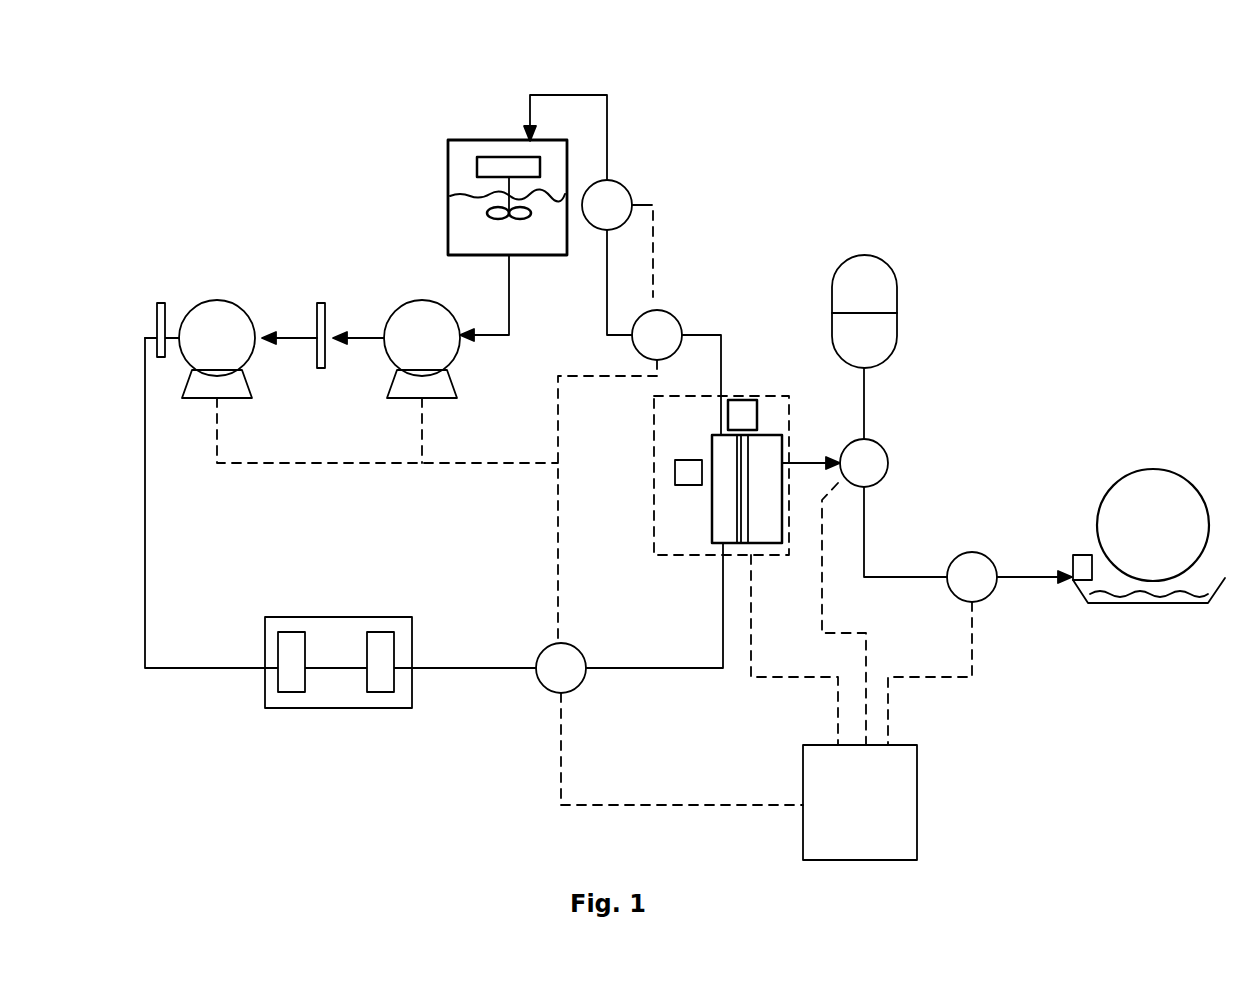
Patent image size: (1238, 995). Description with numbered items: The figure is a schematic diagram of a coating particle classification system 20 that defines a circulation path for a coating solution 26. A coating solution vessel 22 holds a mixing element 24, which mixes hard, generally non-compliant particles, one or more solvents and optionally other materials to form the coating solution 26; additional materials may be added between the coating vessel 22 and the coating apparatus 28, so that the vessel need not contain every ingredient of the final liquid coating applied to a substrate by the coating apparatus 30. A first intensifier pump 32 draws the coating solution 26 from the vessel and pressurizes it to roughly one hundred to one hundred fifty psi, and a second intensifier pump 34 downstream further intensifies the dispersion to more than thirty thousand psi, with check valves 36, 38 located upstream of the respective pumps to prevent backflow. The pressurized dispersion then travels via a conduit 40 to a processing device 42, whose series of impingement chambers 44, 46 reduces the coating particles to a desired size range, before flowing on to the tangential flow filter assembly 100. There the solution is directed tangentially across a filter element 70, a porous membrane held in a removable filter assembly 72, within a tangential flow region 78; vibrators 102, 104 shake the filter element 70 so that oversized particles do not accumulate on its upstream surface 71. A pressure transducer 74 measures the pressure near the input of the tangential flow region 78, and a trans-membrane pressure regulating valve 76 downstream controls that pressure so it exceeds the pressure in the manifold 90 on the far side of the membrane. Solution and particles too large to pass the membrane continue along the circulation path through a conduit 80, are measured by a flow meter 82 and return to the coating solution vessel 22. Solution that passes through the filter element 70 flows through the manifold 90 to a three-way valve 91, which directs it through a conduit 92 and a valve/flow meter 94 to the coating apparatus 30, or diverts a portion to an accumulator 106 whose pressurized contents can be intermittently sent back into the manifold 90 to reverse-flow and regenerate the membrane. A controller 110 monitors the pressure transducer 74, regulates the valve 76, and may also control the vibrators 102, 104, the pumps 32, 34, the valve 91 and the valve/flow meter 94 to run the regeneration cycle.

The coating particle classification system 20 is at (1037, 233).
The coating solution vessel 22 is at (447, 160).
The mixing element 24 is at (490, 160).
The coating solution 26 is at (460, 236).
The coating apparatus 28 is at (1172, 602).
The coating apparatus 30 is at (1112, 604).
The first intensifier pump 32 is at (422, 308).
The second intensifier pump 34 is at (217, 310).
The check valve 36 is at (325, 303).
The check valve 38 is at (165, 305).
The conduit 40 is at (145, 510).
The processing device 42 is at (350, 617).
The impingement chamber 44 is at (290, 692).
The impingement chamber 46 is at (378, 692).
The filter element 70 is at (737, 510).
The upstream surface 71 is at (737, 530).
The filter assembly 72 is at (725, 502).
The pressure transducer 74 is at (568, 650).
The trans-membrane pressure regulating valve 76 is at (660, 323).
The tangential flow region 78 is at (722, 448).
The conduit 80 is at (609, 128).
The flow meter 82 is at (624, 190).
The manifold 90 is at (768, 445).
The three-way valve 91 is at (878, 462).
The conduit 92 is at (868, 530).
The valve/flow meter 94 is at (980, 560).
The tangential flow filter assembly 100 is at (757, 397).
The vibrator 102 is at (737, 415).
The vibrator 104 is at (675, 472).
The accumulator 106 is at (866, 266).
The controller 110 is at (880, 816).